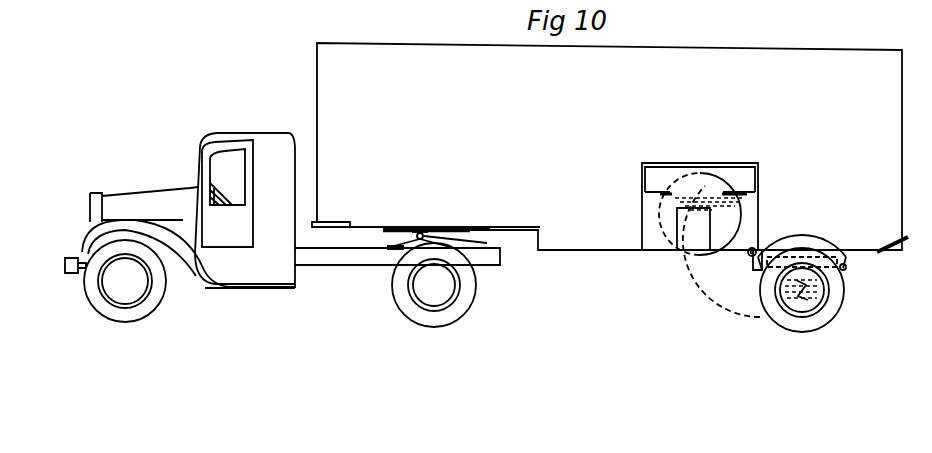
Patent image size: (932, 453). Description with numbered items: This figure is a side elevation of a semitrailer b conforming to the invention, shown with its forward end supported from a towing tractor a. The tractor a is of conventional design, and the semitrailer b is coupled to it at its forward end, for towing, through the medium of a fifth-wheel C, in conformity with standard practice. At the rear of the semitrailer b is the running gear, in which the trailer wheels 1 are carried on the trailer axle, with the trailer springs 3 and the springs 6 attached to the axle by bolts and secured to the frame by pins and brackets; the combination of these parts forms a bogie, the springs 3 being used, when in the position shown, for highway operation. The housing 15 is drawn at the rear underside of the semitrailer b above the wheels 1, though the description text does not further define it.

The tractor a is at (255, 133).
The semitrailer b is at (648, 58).
The fifth-wheel C is at (453, 227).
The trailer wheels 1 is at (658, 218).
The trailer springs 3 is at (782, 292).
The springs 6 is at (700, 206).
The wheel housing 15 is at (745, 213).